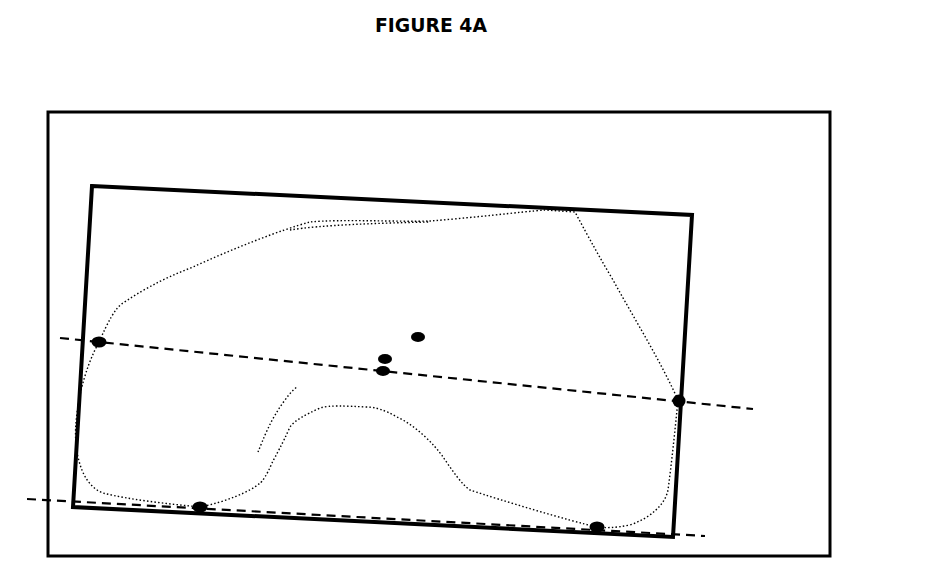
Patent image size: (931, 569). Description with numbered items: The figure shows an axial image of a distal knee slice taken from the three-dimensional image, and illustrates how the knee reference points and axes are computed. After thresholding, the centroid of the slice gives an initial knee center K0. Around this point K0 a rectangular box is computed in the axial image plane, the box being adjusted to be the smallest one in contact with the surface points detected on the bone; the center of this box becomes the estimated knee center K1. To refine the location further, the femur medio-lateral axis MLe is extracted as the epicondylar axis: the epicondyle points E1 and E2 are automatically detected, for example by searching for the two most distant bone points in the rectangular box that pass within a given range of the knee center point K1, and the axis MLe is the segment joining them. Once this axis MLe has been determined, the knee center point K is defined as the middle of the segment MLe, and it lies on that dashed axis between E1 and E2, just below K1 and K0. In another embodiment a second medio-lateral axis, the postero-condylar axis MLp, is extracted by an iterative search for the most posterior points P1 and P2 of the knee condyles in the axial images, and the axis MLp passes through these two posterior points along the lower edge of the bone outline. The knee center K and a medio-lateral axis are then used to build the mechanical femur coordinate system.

The epicondyle point E1 is at (77, 330).
The epicondyle point E2 is at (697, 396).
The initial knee center K0 is at (401, 330).
The estimated knee center K1 is at (358, 364).
The knee center point K is at (380, 386).
The most posterior point P1 is at (186, 492).
The most posterior point P2 is at (604, 514).
The femur medio-lateral epicondylar axis MLe is at (441, 393).
The postero-condylar axis MLp is at (423, 520).